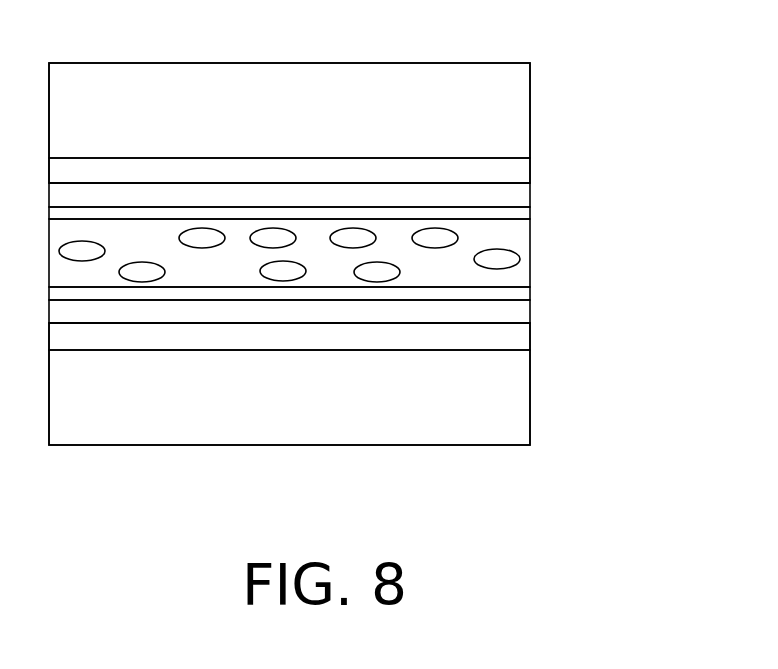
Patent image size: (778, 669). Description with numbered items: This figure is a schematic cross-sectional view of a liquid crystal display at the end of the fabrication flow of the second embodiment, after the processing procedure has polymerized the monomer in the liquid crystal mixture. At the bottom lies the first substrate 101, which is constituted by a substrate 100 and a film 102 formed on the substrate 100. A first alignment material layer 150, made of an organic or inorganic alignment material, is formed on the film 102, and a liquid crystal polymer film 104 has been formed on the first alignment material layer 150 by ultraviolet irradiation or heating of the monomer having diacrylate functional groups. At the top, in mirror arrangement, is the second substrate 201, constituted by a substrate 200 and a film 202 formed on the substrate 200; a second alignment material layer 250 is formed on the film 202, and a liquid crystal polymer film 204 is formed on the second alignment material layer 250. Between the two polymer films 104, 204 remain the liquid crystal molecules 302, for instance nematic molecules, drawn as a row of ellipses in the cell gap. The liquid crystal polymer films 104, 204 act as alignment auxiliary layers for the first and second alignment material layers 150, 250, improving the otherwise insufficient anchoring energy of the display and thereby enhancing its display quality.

The substrate 100 is at (517, 422).
The first substrate 101 is at (633, 347).
The film 102 is at (518, 338).
The liquid crystal polymer film 104 is at (523, 294).
The first alignment material layer 150 is at (500, 312).
The substrate 200 is at (500, 97).
The second substrate 201 is at (633, 70).
The film 202 is at (500, 168).
The liquid crystal polymer film 204 is at (518, 212).
The second alignment material layer 250 is at (500, 195).
The liquid crystal molecule 302 is at (508, 258).